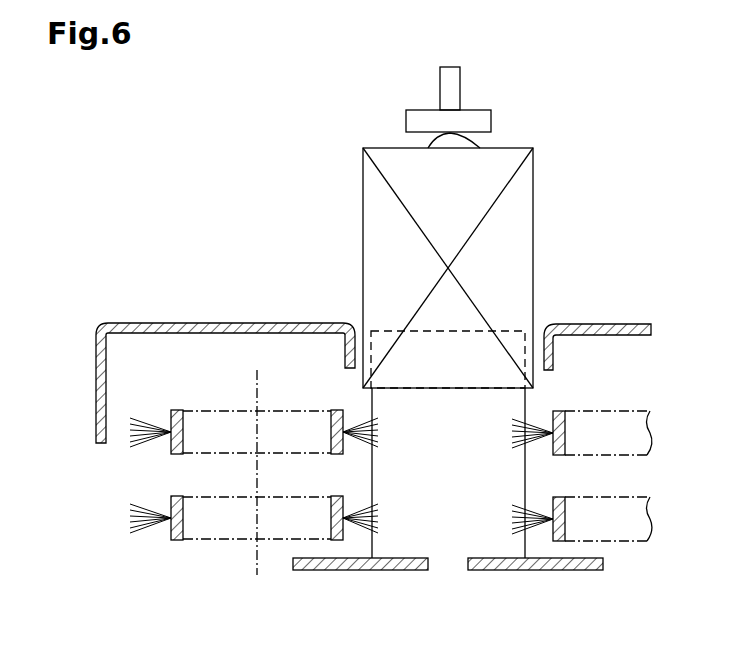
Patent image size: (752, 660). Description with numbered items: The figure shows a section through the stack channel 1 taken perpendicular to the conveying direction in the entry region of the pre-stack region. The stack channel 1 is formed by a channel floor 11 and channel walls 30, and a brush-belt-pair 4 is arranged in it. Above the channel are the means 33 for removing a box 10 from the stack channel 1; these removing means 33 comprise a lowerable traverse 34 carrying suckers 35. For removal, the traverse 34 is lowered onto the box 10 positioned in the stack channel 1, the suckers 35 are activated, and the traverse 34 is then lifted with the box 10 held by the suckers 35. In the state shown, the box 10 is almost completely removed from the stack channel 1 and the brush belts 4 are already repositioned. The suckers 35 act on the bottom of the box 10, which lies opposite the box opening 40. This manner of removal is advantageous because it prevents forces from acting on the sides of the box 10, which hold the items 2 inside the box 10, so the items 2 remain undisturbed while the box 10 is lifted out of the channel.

The stack channel 1 is at (354, 315).
The items 2 is at (454, 530).
The brush-belt-pair 4 is at (332, 521).
The box 10 is at (537, 230).
The channel floor 11 is at (520, 568).
The channel walls 30 is at (555, 350).
The means for removing a box or a frame 33 is at (468, 95).
The traverse 34 is at (485, 124).
The suckers 35 is at (427, 147).
The box opening 40 is at (457, 388).